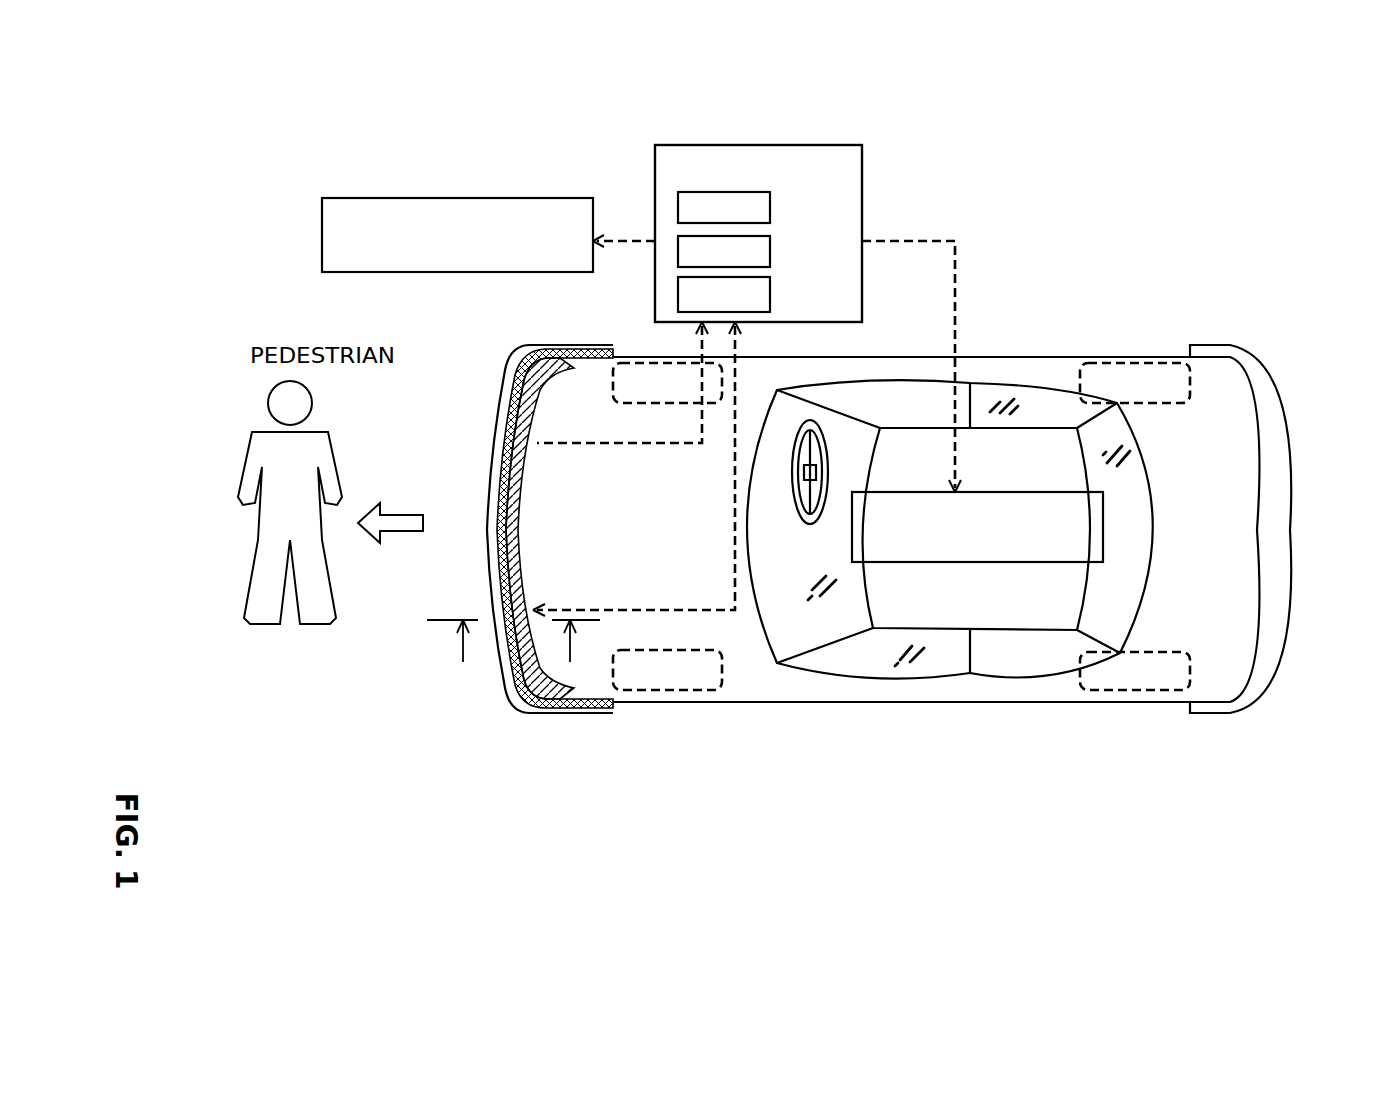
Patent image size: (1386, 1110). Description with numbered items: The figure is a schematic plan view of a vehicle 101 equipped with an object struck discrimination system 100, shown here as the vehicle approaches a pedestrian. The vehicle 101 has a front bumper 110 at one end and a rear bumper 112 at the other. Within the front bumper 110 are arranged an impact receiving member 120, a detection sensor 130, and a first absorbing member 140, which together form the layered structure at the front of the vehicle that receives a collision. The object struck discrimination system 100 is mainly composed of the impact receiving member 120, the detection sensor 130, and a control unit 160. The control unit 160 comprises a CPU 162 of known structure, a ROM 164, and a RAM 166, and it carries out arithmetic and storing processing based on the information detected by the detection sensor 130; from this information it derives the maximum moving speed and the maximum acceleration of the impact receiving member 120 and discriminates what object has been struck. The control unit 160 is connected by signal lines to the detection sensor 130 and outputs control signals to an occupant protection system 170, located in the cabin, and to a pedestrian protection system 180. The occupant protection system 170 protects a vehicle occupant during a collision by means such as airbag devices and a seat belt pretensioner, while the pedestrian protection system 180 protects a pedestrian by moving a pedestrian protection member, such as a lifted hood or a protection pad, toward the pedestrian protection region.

The object struck discrimination system 100 is at (987, 115).
The vehicle 101 is at (1023, 346).
The front bumper 110 is at (510, 558).
The rear bumper 112 is at (1284, 670).
The impact receiving member 120 is at (520, 683).
The detection sensor 130 is at (512, 605).
The first absorbing member 140 is at (530, 400).
The control unit 160 is at (758, 182).
The CPU 162 is at (772, 205).
The ROM 164 is at (772, 248).
The RAM 166 is at (772, 292).
The occupant protection system 170 is at (1013, 577).
The pedestrian protection system 180 is at (460, 198).